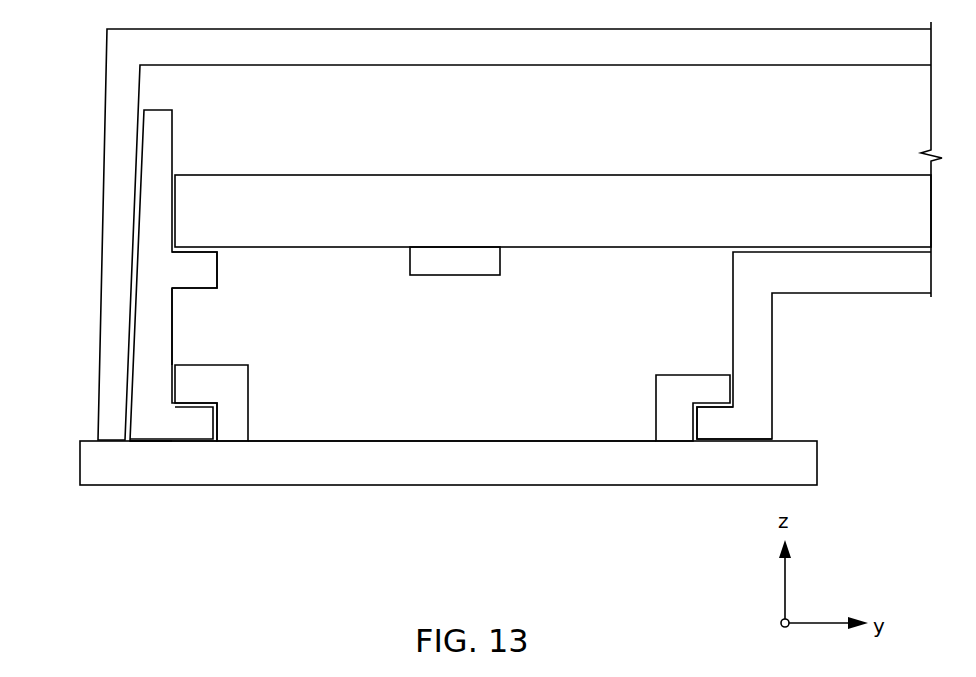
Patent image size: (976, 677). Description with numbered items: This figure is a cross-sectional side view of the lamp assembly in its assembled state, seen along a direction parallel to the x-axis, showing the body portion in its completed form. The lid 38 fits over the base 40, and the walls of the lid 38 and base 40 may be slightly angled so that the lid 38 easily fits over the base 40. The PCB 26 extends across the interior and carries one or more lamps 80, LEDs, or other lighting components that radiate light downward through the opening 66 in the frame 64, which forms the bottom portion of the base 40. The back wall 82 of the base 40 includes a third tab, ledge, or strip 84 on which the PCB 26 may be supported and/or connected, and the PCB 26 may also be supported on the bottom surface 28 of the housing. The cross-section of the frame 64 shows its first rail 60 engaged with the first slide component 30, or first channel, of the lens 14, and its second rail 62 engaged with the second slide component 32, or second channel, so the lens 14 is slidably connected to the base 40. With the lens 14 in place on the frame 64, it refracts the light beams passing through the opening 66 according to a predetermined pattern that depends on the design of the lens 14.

The lens 14 is at (388, 500).
The PCB 26 is at (428, 175).
The bottom surface 28 is at (793, 240).
The first slide component 30 is at (244, 385).
The second slide component 32 is at (663, 398).
The lid 38 is at (101, 231).
The base 40 is at (122, 363).
The first rail 60 is at (198, 418).
The second rail 62 is at (743, 418).
The frame 64 is at (152, 455).
The opening 66 is at (465, 420).
The lamp 80 is at (453, 277).
The back wall 82 is at (168, 310).
The third tab 84 is at (218, 270).